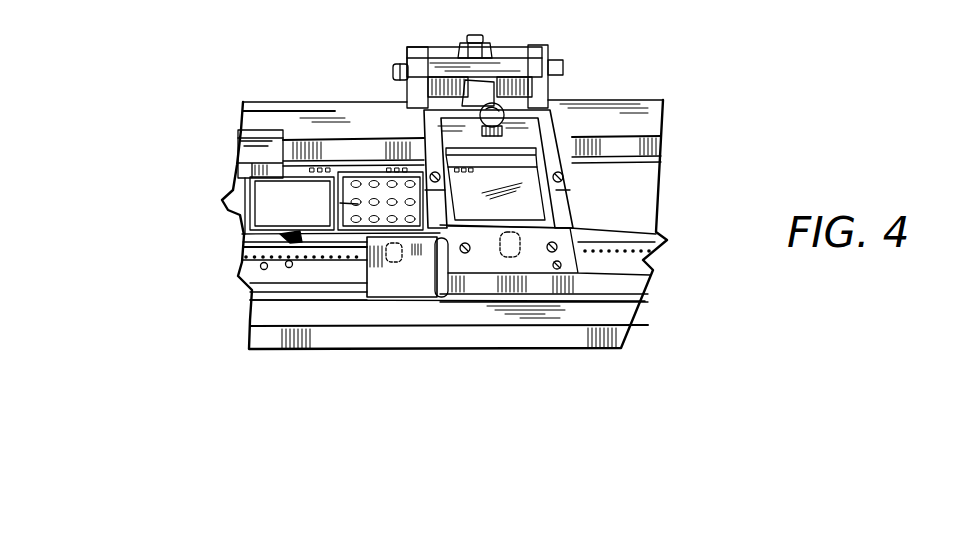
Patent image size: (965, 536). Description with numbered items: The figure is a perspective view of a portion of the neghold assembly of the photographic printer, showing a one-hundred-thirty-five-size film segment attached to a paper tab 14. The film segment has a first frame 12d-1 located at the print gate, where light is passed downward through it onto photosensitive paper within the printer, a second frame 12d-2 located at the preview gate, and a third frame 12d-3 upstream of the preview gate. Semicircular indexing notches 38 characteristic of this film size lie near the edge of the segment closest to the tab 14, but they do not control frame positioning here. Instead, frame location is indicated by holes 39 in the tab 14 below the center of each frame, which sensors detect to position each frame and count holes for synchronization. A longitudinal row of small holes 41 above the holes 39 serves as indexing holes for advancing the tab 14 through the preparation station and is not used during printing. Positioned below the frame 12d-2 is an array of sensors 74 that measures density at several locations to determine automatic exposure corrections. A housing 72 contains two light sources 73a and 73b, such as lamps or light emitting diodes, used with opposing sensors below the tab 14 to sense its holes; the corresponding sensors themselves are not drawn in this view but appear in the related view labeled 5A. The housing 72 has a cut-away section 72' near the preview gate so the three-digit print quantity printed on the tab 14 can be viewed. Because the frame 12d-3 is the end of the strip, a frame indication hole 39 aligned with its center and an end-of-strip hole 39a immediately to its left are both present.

The tab 14 is at (243, 288).
The top slab of base 5A is at (283, 97).
The third frame 12d-3 is at (323, 204).
The second frame 12d-2 is at (382, 190).
The indexing holes or notches 38 is at (285, 233).
The array of sensors 74 is at (357, 203).
The small holes 41 is at (250, 272).
The holes 39 is at (293, 266).
The end-of-strip hole 39a is at (262, 268).
The light source 73a is at (402, 260).
The cut-away section 72' is at (393, 313).
The housing 72 is at (549, 259).
The light source 73b is at (512, 234).
The first frame 12d-1 is at (527, 205).